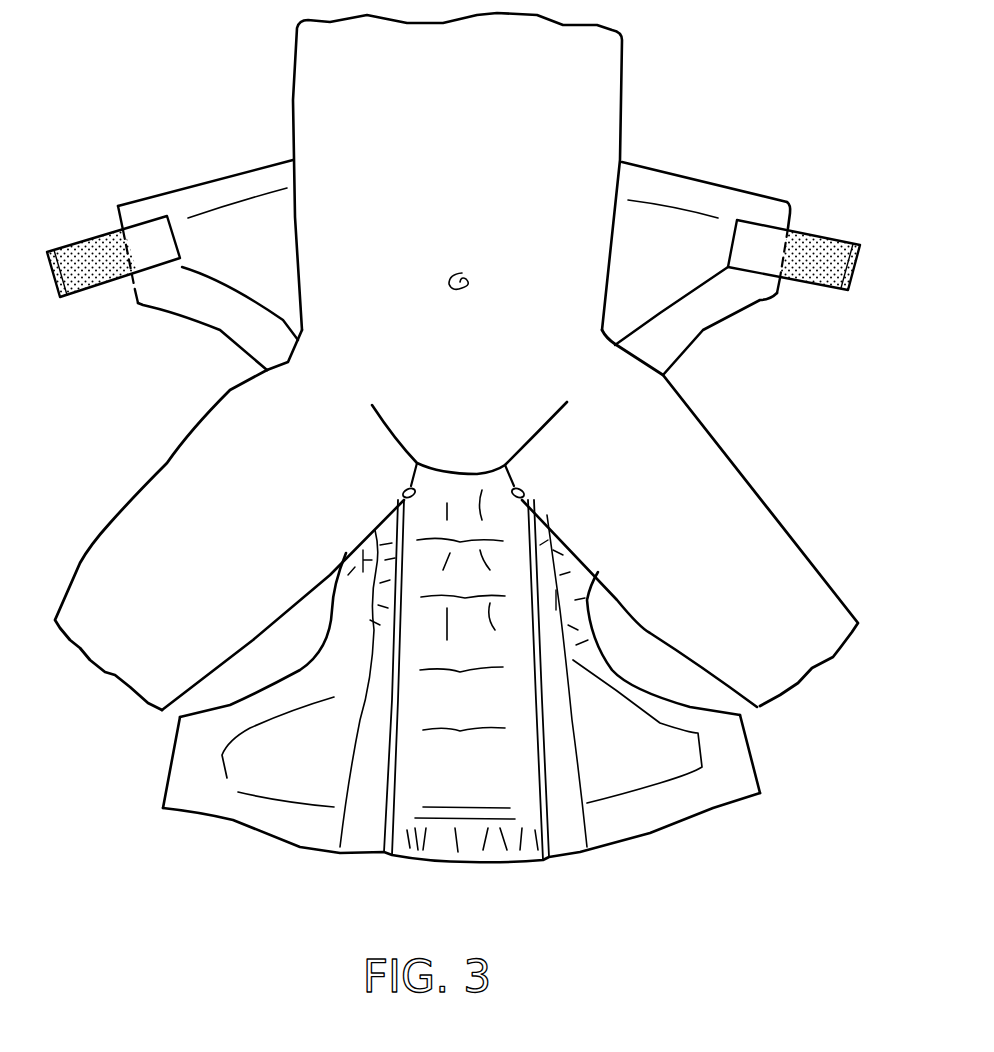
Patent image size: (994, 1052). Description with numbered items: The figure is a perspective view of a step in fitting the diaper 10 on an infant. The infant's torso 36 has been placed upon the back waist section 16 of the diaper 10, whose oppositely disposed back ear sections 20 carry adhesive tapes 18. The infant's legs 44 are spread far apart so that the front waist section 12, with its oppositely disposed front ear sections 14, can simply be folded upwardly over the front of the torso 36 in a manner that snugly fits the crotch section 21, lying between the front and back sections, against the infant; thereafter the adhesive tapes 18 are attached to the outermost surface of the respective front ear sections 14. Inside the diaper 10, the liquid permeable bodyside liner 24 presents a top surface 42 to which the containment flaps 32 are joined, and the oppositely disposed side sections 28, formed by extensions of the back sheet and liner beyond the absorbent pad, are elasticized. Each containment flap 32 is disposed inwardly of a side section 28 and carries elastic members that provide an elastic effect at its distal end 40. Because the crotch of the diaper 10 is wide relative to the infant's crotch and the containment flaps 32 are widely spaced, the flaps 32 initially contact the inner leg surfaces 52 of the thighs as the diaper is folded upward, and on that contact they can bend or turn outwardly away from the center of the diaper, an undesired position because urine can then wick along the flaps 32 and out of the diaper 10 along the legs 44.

The diaper 10 is at (190, 938).
The front waist section 12 is at (187, 768).
The front ear sections 14 is at (165, 810).
The back waist section 16 is at (210, 187).
The adhesive tapes 18 is at (83, 251).
The back ear sections 20 is at (148, 203).
The crotch section 21 is at (306, 588).
The bodyside liner 24 is at (607, 775).
The side sections 28 is at (333, 610).
The containment flaps 32 is at (372, 722).
The torso 36 is at (552, 134).
The distal ends 40 is at (406, 692).
The top surface 42 is at (449, 791).
The legs 44 is at (110, 523).
The inner leg surfaces 52 is at (408, 488).